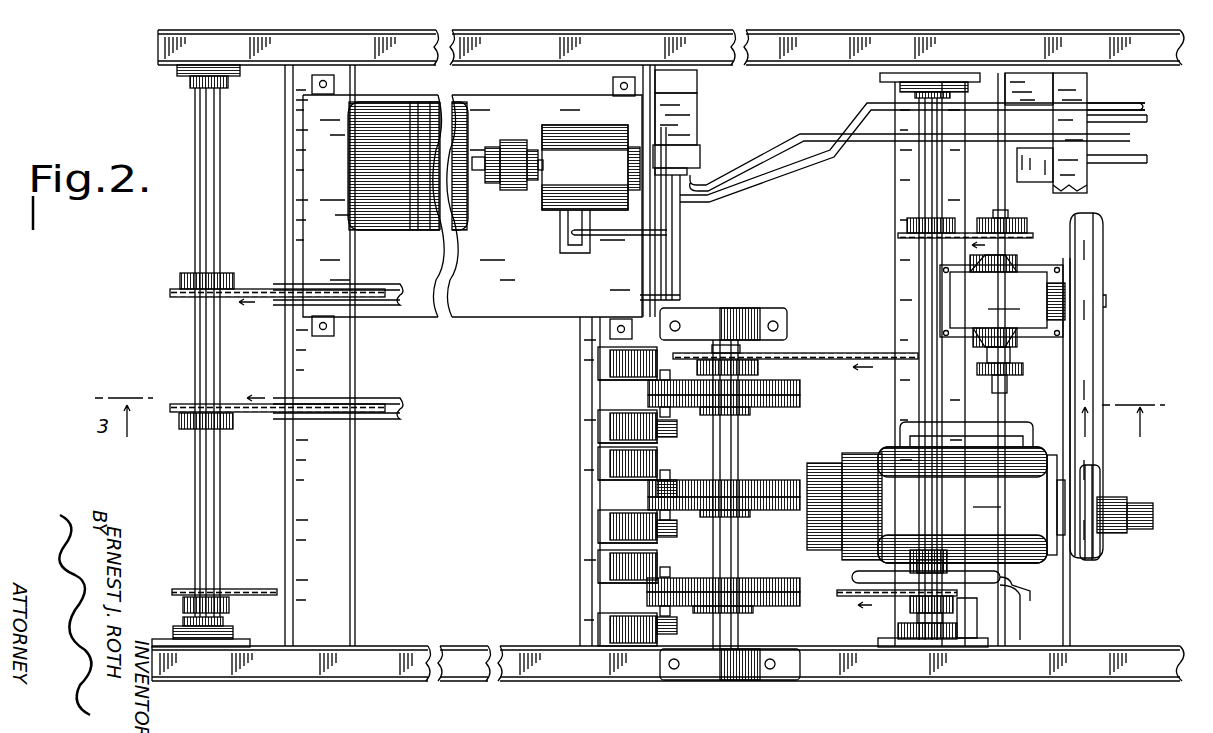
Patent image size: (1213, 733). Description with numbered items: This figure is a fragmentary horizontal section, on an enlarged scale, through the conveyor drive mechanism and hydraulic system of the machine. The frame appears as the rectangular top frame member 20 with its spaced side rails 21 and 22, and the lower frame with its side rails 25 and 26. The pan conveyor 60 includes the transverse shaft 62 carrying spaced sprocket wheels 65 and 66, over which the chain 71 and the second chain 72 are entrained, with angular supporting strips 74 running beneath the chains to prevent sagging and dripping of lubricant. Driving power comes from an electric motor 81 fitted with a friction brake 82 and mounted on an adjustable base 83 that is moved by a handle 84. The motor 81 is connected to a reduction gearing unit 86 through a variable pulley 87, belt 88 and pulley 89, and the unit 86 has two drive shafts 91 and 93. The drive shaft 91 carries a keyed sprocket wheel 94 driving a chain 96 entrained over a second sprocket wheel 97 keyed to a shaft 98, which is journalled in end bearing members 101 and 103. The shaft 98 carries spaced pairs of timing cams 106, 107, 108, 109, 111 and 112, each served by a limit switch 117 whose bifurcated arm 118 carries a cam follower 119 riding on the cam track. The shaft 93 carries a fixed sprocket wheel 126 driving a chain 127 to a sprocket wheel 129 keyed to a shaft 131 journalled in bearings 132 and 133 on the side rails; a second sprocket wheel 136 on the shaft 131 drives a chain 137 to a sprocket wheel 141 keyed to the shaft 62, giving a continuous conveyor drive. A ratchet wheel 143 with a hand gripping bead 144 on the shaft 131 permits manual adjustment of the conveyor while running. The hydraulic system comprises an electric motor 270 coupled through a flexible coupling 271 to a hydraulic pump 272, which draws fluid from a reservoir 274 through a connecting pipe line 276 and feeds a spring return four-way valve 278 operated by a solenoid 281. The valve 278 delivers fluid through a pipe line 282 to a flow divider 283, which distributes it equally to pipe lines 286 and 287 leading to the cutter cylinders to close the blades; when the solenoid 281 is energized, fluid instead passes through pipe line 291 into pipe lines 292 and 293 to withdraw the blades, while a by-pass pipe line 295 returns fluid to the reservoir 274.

The top frame member 20 is at (721, 31).
The side rail 21 is at (288, 665).
The side rail 22 is at (472, 34).
The side rail 25 is at (543, 681).
The side rail 26 is at (799, 35).
The pan conveyor 60 is at (370, 418).
The shaft 62 is at (205, 510).
The sprocket wheel 65 is at (188, 422).
The sprocket wheel 66 is at (193, 283).
The chain 71 is at (250, 290).
The chain 72 is at (245, 414).
The angular supporting strip 74 is at (393, 305).
The electric motor 81 is at (1015, 492).
The friction brake 82 is at (825, 460).
The adjustable base 83 is at (1010, 598).
The handle 84 is at (962, 660).
The reduction gearing unit 86 is at (1002, 301).
The variable pulley 87 is at (1100, 482).
The belt 88 is at (1086, 405).
The pulley 89 is at (1100, 272).
The drive shaft 91 is at (992, 388).
The drive shaft 93 is at (994, 210).
The sprocket wheel 94 is at (1012, 371).
The chain 96 is at (821, 352).
The sprocket wheel 97 is at (783, 354).
The shaft 98 is at (735, 432).
The end bearing member 101 is at (722, 661).
The end bearing member 103 is at (720, 325).
The timing cam 106 is at (805, 387).
The timing cam 107 is at (805, 402).
The timing cam 108 is at (785, 482).
The timing cam 109 is at (790, 503).
The timing cam 111 is at (797, 582).
The timing cam 112 is at (782, 604).
The limit switch 117 is at (615, 458).
The bifurcated arm 118 is at (668, 412).
The cam follower 119 is at (600, 497).
The sprocket wheel 126 is at (1012, 221).
The chain 127 is at (940, 236).
The sprocket wheel 129 is at (905, 222).
The shaft 131 is at (925, 283).
The bearing 132 is at (930, 641).
The bearing 133 is at (937, 78).
The sprocket wheel 136 is at (945, 561).
The chain 137 is at (262, 588).
The sprocket wheel 141 is at (225, 605).
The wheel 143 is at (887, 576).
The hand gripping bead 144 is at (852, 577).
The electric motor 270 is at (378, 155).
The flexible coupling 271 is at (515, 145).
The hydraulic pump 272 is at (583, 138).
The reservoir 274 is at (493, 300).
The connecting pipe line 276 is at (683, 260).
The four-way valve 278 is at (683, 125).
The solenoid 281 is at (683, 82).
The pipe line 282 is at (867, 140).
The flow divider 283 is at (1077, 137).
The pipe line 286 is at (1125, 163).
The pipe line 287 is at (1140, 120).
The pipe line 291 is at (843, 116).
The pipe line 292 is at (1125, 98).
The pipe line 293 is at (1140, 104).
The by-pass pipe line 295 is at (612, 240).